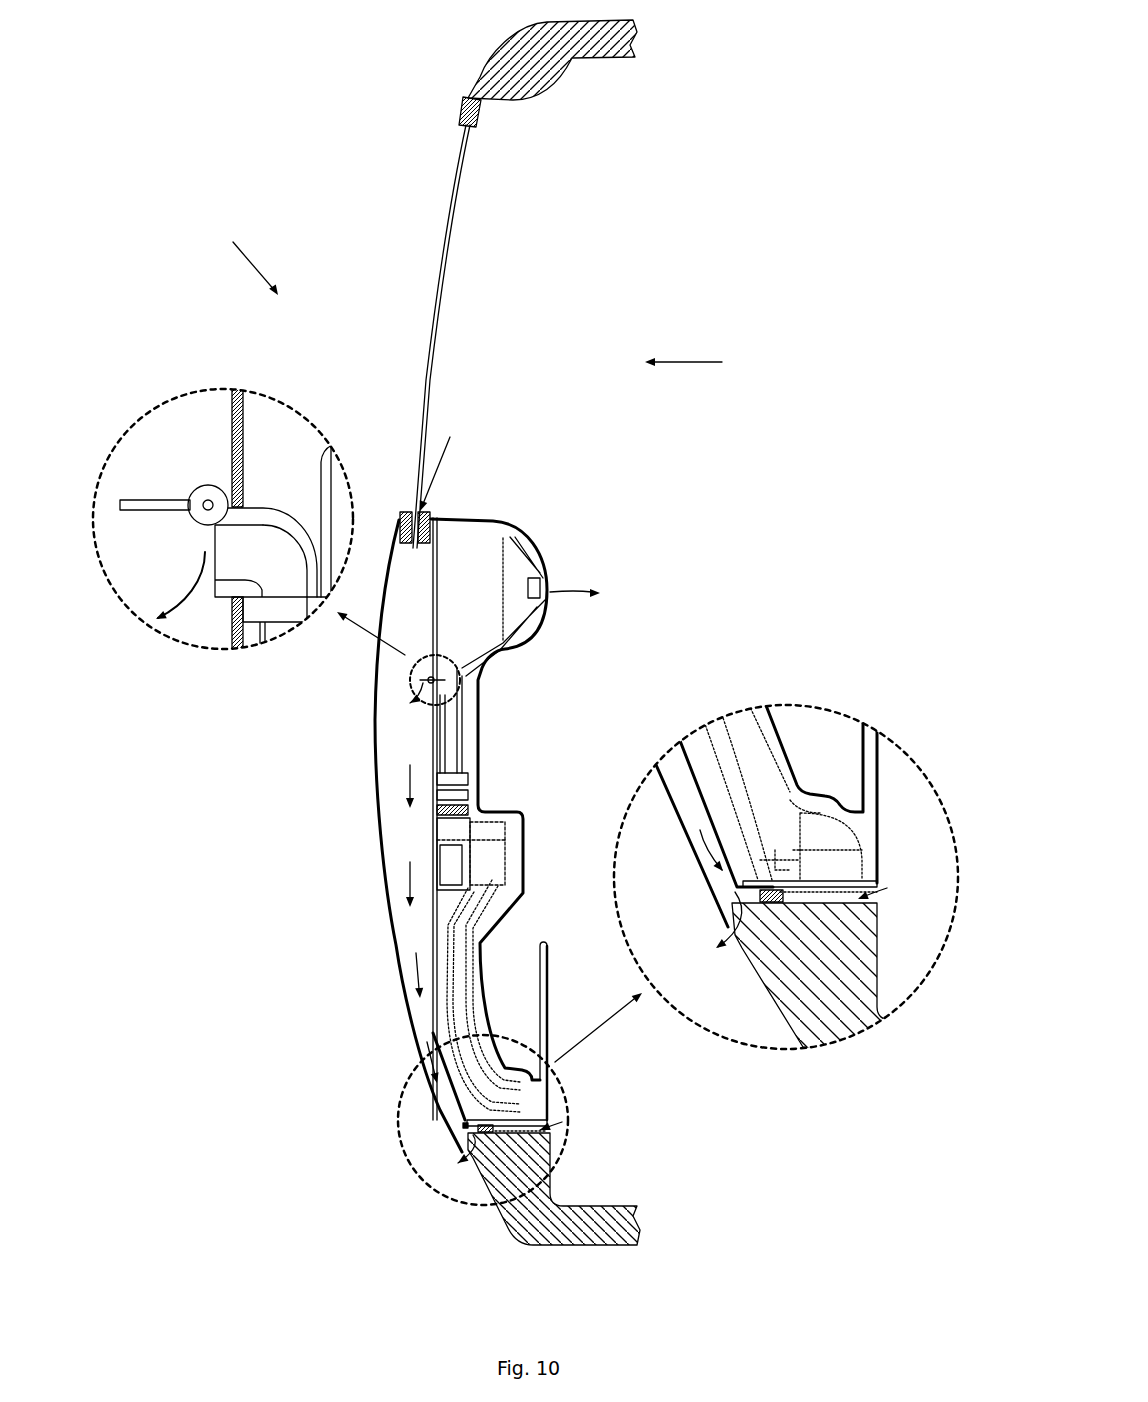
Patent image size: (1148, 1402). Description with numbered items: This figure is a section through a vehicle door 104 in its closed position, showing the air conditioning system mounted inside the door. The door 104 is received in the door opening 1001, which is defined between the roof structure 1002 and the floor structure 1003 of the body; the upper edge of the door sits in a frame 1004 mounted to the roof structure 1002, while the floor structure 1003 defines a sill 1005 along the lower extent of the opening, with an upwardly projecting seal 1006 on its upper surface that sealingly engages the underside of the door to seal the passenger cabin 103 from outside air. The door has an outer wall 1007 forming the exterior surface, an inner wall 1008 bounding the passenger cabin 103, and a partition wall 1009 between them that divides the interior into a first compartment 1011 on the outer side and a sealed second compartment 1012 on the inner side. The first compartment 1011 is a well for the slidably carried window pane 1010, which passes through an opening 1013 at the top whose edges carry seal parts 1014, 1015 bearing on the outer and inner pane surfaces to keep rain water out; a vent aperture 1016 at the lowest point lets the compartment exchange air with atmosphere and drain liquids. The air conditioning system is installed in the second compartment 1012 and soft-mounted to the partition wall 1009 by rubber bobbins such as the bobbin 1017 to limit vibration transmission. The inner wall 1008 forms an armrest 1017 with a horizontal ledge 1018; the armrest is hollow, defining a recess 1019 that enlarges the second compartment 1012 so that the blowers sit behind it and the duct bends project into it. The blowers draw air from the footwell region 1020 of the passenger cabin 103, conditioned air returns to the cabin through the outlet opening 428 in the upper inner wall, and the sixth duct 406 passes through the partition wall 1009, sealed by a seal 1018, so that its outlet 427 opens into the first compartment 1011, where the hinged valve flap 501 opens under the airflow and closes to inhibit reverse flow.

The door opening 1001 is at (710, 363).
The roof structure 1002 is at (605, 38).
The floor structure 1003 is at (612, 1226).
The frame 1004 is at (465, 117).
The sill 1005 is at (513, 1138).
The seal 1006 is at (490, 1135).
The outer wall 1007 is at (373, 742).
The inner wall 1008 is at (480, 735).
The partition wall 1009 is at (437, 550).
The window pane 1010 is at (440, 278).
The first compartment 1011 is at (431, 755).
The second compartment 1012 is at (495, 623).
The opening 1013 is at (457, 463).
The seal part 1014 is at (407, 512).
The seal part 1015 is at (428, 512).
The vent aperture 1016 is at (462, 1128).
The armrest 1017 is at (523, 860).
The ledge 1018 is at (503, 807).
The recess 1019 is at (512, 845).
The footwell region 1020 is at (726, 1128).
The door 104 is at (244, 257).
The passenger cabin 103 is at (804, 651).
The outlet opening 428 is at (547, 588).
The outlet 427 is at (213, 540).
The sixth duct 406 is at (268, 508).
The valve flap 501 is at (140, 500).